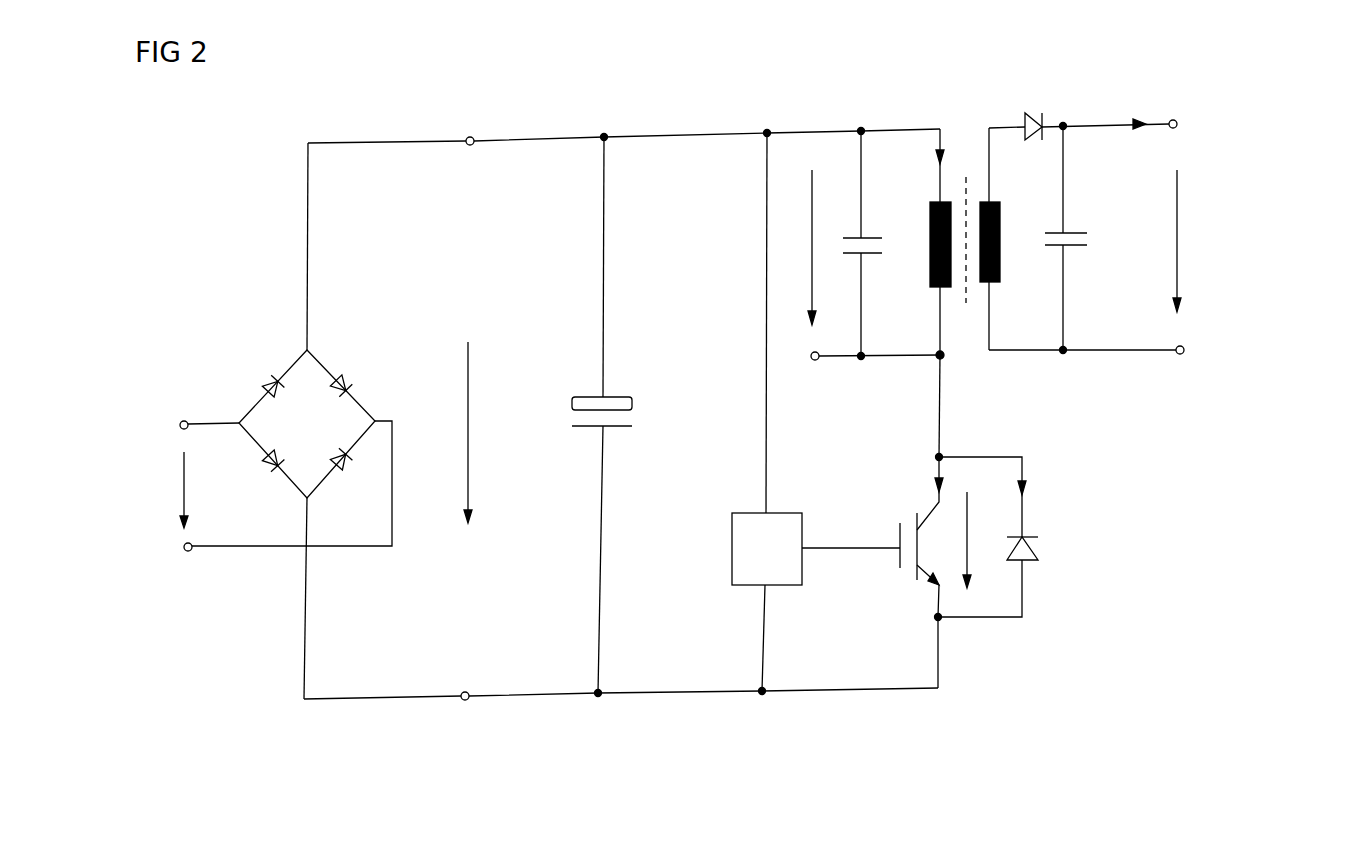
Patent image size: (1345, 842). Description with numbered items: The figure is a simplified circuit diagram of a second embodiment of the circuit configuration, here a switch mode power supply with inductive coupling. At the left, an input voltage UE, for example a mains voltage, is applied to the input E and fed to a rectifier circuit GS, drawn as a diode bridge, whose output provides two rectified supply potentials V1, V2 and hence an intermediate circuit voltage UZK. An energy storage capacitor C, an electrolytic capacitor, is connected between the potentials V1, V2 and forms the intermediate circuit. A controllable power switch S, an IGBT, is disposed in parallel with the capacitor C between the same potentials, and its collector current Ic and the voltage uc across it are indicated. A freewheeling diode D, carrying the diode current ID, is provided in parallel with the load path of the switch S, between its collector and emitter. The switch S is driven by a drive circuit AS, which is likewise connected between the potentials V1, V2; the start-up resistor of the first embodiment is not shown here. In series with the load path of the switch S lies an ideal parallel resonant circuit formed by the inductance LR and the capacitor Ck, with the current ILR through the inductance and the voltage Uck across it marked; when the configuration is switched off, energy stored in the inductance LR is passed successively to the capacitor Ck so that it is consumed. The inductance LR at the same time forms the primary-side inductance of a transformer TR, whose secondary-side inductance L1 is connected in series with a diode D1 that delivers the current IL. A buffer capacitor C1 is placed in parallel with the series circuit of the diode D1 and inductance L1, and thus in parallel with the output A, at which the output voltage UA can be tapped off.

The rectifier circuit GS is at (255, 352).
The input E is at (155, 503).
The input voltage UE is at (198, 490).
The rectified supply potential V1 is at (472, 127).
The rectified supply potential V2 is at (467, 712).
The energy storage capacitor C is at (613, 415).
The intermediate circuit voltage UZK is at (490, 432).
The drive circuit AS is at (767, 412).
The controllable power switch S is at (872, 537).
The collector current Ic is at (924, 427).
The switch voltage uc is at (980, 551).
The freewheeling diode D is at (1000, 537).
The diode current ID is at (1037, 486).
The resonant circuit capacitor Ck is at (868, 243).
The resonant circuit voltage Uck is at (797, 256).
The transformer TR is at (961, 212).
The resonant circuit inductance LR is at (923, 242).
The inductance current ILR is at (923, 154).
The secondary-side inductance L1 is at (1003, 239).
The diode D1 is at (1030, 112).
The output current IL is at (1138, 112).
The buffer capacitor C1 is at (1084, 238).
The output voltage UA is at (1193, 241).
The output A is at (1248, 245).